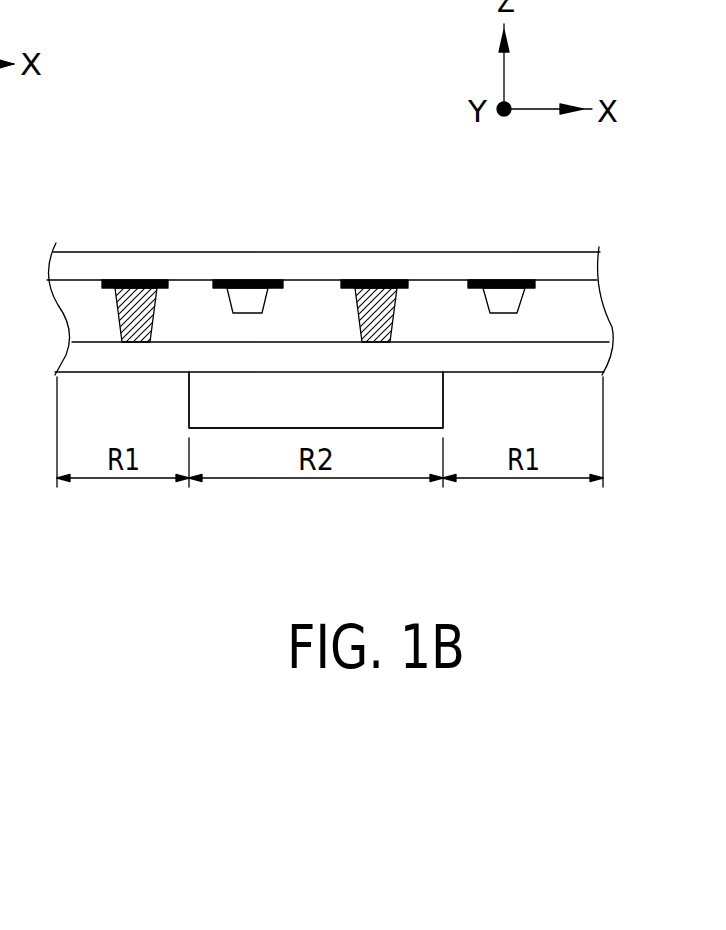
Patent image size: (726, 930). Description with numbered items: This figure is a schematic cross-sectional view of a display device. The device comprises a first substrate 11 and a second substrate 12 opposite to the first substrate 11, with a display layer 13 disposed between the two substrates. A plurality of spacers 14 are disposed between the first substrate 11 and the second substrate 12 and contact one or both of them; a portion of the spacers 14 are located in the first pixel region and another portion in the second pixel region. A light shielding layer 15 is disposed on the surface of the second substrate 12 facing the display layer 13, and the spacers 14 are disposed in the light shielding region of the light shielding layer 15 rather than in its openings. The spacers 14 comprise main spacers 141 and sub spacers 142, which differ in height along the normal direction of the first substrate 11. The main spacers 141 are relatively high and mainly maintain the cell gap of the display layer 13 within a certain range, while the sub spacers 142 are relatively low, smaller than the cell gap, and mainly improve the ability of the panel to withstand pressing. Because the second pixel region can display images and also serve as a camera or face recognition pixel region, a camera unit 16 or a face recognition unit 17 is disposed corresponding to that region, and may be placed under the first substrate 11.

The first substrate 11 is at (592, 357).
The second substrate 12 is at (580, 260).
The display layer 13 is at (83, 322).
The spacers 14 is at (396, 322).
The main spacers 141 is at (390, 322).
The sub spacers 142 is at (508, 298).
The light shielding layer 15 is at (535, 282).
The camera unit 16 is at (428, 410).
The face recognition unit 17 is at (487, 400).